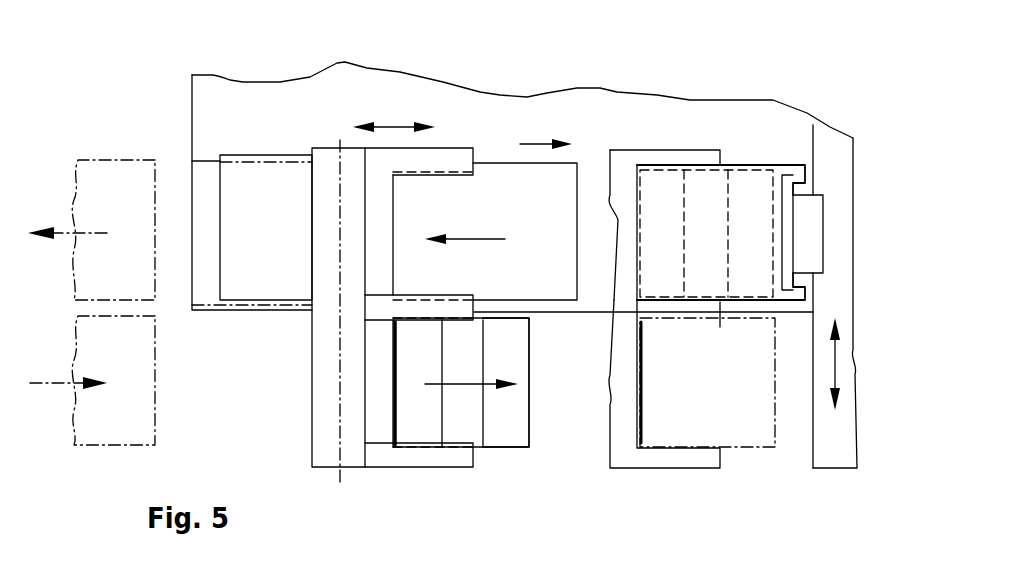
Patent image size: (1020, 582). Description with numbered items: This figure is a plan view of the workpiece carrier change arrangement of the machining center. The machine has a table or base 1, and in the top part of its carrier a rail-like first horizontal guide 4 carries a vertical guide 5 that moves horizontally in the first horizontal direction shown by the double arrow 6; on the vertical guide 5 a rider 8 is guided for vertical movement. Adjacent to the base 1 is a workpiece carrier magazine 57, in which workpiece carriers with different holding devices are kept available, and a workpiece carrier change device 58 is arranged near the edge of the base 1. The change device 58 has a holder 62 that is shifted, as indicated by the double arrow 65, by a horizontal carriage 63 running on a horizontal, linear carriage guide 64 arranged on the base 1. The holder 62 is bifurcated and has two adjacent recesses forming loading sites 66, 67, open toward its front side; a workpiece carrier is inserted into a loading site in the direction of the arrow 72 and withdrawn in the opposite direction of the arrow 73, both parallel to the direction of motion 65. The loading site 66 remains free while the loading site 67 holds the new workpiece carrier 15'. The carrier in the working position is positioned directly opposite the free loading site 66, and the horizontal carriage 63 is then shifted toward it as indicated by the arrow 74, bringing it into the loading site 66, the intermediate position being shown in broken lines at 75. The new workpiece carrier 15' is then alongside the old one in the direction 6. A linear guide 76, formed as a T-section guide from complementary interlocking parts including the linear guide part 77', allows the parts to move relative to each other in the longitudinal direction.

The base 1 is at (577, 97).
The first horizontal guide 4 is at (832, 238).
The vertical guide 5 is at (808, 210).
The double arrow 6 is at (838, 362).
The rider 8 is at (782, 170).
The workpiece carrier 15' is at (629, 425).
The workpiece carrier magazine 57 is at (117, 140).
The workpiece carrier change device 58 is at (341, 120).
The holder 62 is at (388, 455).
The horizontal carriage 63 is at (271, 283).
The carriage guide 64 is at (207, 284).
The double arrow 65 is at (395, 127).
The loading site 66 is at (462, 180).
The loading site 67 is at (445, 325).
The arrow 72 is at (505, 239).
The arrow 73 is at (462, 380).
The arrow 74 is at (537, 144).
The intermediate position 75 is at (641, 148).
The linear guide 76 is at (718, 176).
The linear guide part 77' is at (462, 422).